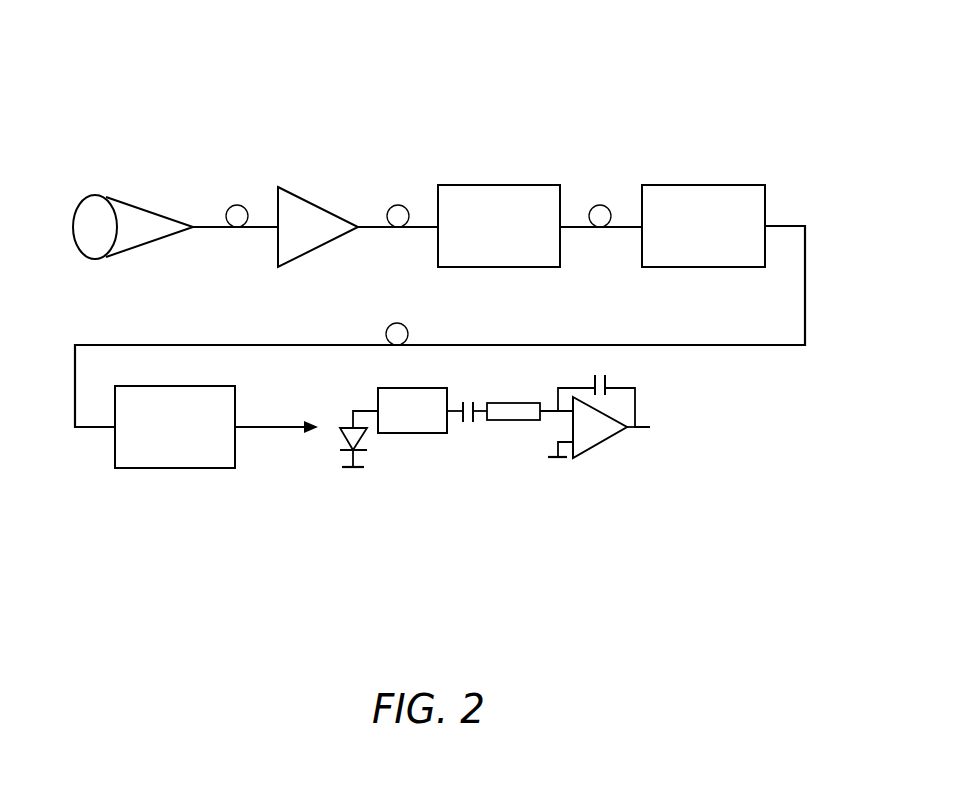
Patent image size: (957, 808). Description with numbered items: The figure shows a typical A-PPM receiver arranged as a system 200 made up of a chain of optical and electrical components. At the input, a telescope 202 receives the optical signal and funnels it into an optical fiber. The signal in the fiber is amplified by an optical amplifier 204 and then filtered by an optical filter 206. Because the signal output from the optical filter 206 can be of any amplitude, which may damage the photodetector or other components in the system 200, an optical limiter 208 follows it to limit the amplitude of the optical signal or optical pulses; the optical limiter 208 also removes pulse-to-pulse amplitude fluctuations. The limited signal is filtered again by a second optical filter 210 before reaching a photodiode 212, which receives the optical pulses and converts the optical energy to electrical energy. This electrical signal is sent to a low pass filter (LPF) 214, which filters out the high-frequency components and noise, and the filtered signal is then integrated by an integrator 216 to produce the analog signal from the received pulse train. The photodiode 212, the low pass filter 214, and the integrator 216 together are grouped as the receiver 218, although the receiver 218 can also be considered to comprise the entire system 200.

The system 200 is at (442, 105).
The telescope 202 is at (138, 205).
The optical amplifier 204 is at (313, 197).
The optical filter 206 is at (537, 185).
The optical limiter 208 is at (747, 185).
The optical filter 210 is at (140, 468).
The photodiode 212 is at (340, 438).
The low pass filter (LPF) 214 is at (392, 433).
The integrator 216 is at (548, 453).
The receiver 218 is at (462, 499).